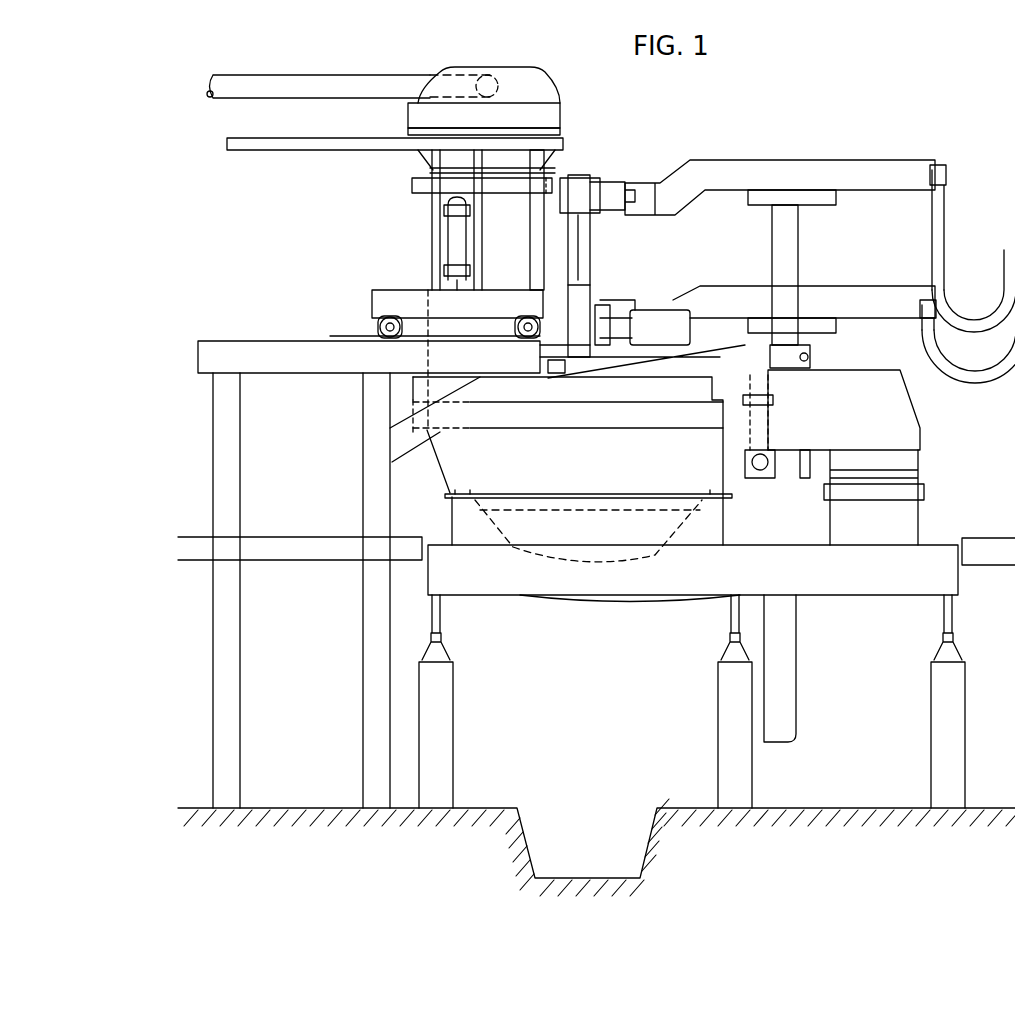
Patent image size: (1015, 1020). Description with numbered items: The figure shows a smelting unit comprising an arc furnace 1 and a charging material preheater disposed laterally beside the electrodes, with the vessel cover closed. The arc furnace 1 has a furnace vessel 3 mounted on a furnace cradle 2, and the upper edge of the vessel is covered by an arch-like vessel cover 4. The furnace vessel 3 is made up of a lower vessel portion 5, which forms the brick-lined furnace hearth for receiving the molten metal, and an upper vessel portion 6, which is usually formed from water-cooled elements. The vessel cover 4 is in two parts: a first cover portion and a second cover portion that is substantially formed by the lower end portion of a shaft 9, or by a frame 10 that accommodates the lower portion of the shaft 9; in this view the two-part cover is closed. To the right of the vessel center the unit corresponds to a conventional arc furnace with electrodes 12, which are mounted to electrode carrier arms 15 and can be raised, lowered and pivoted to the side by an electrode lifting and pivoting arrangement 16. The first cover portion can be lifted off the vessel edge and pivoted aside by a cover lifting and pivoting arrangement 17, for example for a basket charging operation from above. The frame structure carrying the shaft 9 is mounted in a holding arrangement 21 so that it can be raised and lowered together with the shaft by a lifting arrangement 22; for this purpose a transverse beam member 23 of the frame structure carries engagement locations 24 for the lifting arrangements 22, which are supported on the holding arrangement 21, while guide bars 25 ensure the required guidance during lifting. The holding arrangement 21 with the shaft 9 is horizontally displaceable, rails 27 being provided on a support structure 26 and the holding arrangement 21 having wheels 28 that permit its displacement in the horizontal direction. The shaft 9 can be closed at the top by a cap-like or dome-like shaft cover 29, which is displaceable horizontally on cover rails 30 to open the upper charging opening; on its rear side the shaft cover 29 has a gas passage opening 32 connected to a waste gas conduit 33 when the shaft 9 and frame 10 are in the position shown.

The arc furnace 1 is at (648, 302).
The furnace cradle 2 is at (668, 574).
The furnace vessel 3 is at (440, 496).
The vessel cover 4 is at (523, 392).
The lower vessel portion 5 is at (708, 518).
The upper vessel portion 6 is at (437, 447).
The shaft 9 is at (540, 197).
The frame 10 is at (413, 393).
The electrodes 12 is at (576, 248).
The electrode carrier arms 15 is at (858, 172).
The electrode lifting and pivoting arrangement 16 is at (845, 359).
The cover lifting and pivoting arrangement 17 is at (905, 518).
The holding arrangement 21 is at (385, 297).
The lifting arrangement 22 is at (455, 240).
The transverse beam member 23 is at (412, 184).
The engagement locations 24 is at (443, 202).
The guide bars 25 is at (483, 247).
The platform 26 is at (210, 357).
The rails 27 is at (240, 338).
The wheels 28 is at (376, 328).
The shaft cover 29 is at (538, 97).
The plate 30 is at (293, 150).
The gas passage opening 32 is at (482, 80).
The waste gas conduit 33 is at (312, 78).